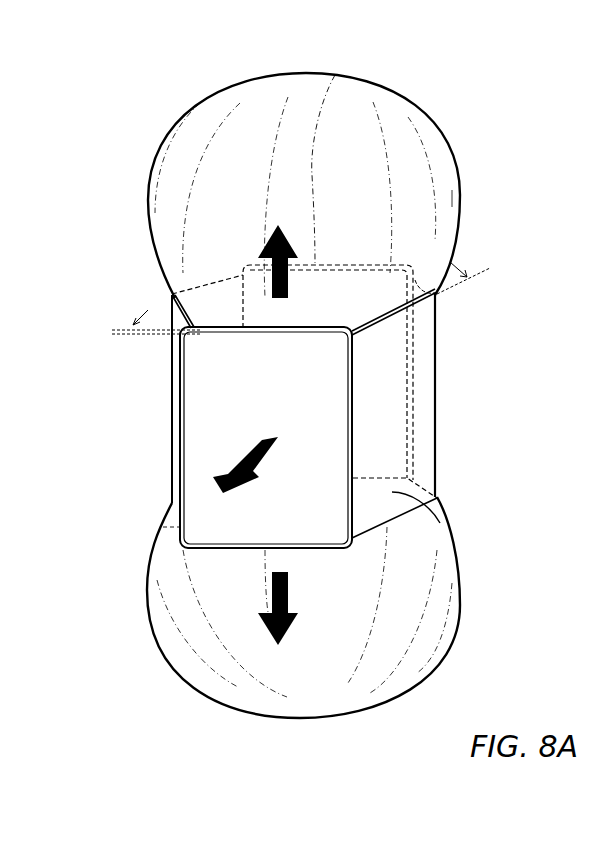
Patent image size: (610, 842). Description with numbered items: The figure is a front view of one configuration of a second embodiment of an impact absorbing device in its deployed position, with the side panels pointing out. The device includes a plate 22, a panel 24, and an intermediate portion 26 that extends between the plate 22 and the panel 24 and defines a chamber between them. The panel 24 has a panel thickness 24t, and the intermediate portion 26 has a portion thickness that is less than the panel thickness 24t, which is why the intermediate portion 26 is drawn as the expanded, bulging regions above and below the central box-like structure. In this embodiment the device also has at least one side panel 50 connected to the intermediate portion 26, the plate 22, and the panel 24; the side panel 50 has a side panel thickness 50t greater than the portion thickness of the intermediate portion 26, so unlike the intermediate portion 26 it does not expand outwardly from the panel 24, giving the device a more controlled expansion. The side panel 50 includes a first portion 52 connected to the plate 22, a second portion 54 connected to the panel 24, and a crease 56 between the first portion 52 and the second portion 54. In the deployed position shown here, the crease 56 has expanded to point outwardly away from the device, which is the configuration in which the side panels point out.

The plate 22 is at (335, 75).
The intermediate portion 26 is at (435, 130).
The panel 24 is at (165, 528).
The panel thickness 24t is at (120, 344).
The side panel 50 is at (464, 359).
The side panel thickness 50t is at (482, 287).
The first portion 52 is at (423, 280).
The second portion 54 is at (440, 523).
The crease 56 is at (437, 400).